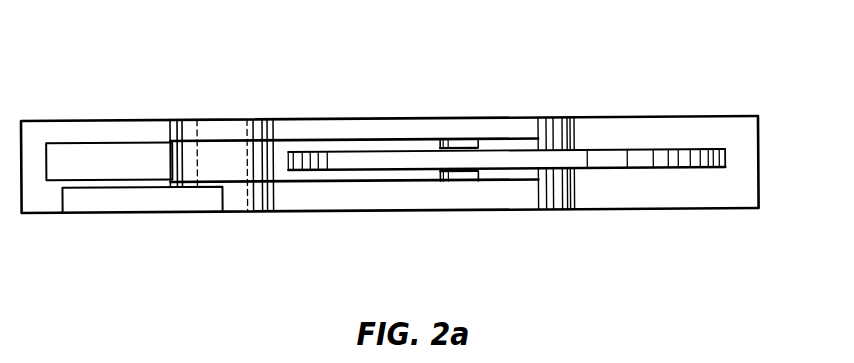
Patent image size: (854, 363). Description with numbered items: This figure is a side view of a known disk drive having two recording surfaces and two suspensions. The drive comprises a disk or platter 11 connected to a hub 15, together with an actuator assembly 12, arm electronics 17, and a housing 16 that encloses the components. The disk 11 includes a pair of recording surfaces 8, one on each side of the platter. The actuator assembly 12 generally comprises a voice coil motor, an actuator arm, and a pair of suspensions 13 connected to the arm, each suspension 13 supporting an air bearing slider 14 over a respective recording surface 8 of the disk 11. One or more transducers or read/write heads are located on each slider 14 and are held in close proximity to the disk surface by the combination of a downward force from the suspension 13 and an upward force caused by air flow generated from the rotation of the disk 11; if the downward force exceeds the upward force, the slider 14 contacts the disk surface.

The recording surface 8 is at (689, 136).
The disk 11 is at (727, 158).
The actuator assembly 12 is at (232, 104).
The suspension 13 is at (328, 138).
The air bearing slider 14 is at (465, 138).
The hub 15 is at (500, 130).
The housing 16 is at (624, 118).
The arm electronics 17 is at (143, 208).